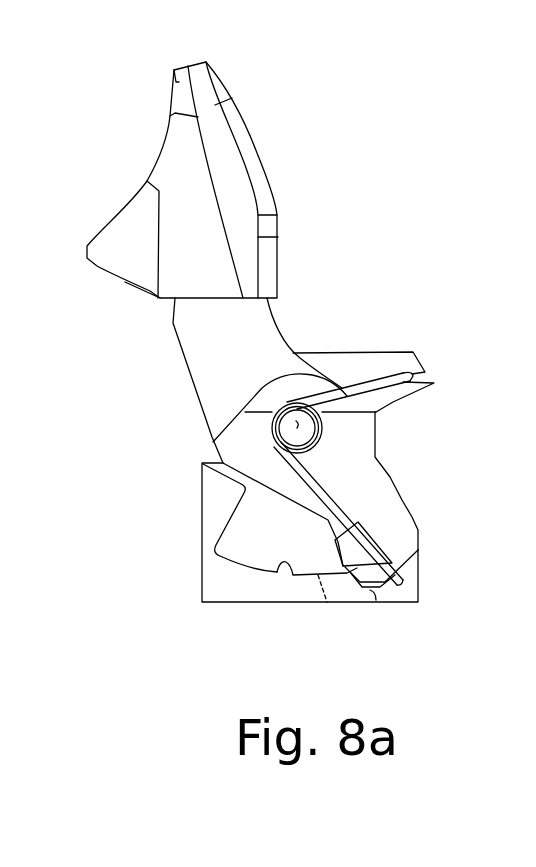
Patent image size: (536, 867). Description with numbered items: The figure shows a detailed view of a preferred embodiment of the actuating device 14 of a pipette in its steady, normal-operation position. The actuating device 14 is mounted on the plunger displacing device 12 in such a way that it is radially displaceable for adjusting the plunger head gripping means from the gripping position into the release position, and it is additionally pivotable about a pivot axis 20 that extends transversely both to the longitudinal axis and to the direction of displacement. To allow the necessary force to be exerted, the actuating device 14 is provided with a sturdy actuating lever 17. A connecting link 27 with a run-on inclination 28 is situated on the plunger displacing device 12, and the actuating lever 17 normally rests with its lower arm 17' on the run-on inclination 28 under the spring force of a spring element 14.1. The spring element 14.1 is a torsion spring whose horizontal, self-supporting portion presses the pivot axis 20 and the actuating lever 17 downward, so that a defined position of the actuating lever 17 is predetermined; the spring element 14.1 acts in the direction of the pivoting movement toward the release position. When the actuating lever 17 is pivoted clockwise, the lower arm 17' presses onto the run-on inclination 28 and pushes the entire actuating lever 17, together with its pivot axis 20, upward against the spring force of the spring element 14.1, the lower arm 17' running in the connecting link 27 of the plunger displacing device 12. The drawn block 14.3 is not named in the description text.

The actuating lever 17 is at (216, 179).
The actuating device 14 is at (297, 322).
The spring element 14.1 is at (322, 488).
The pivot axis 20 is at (272, 423).
The lower arm 17' is at (377, 490).
The lower clamp block of carrier 14.3 is at (358, 552).
The plunger displacing device 12 is at (240, 580).
The connecting link 27 is at (297, 575).
The run-on inclination 28 is at (376, 603).